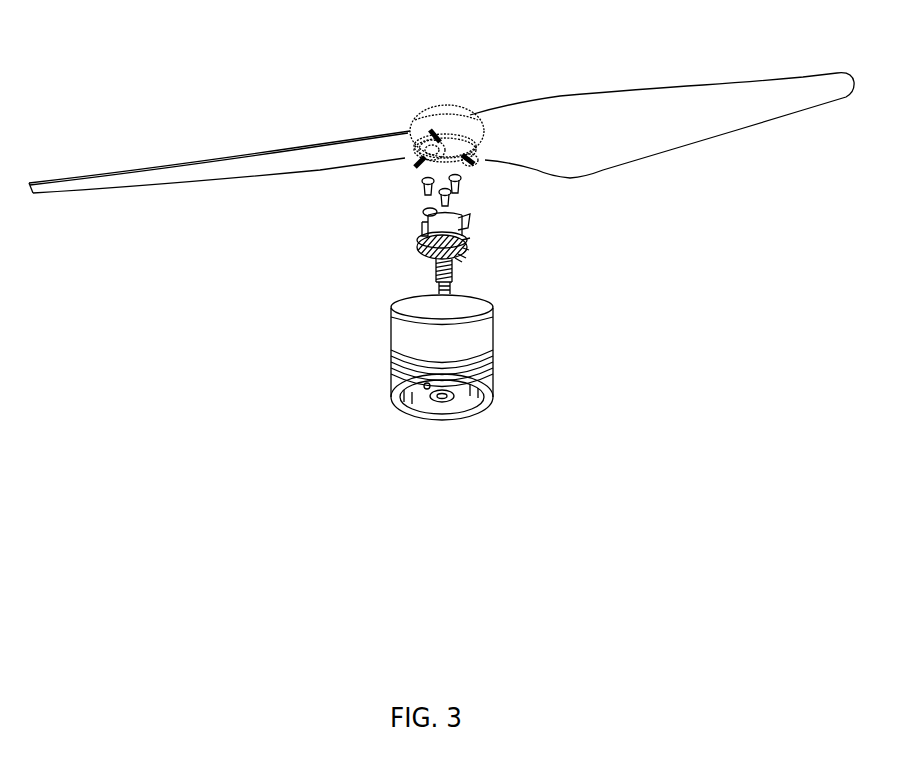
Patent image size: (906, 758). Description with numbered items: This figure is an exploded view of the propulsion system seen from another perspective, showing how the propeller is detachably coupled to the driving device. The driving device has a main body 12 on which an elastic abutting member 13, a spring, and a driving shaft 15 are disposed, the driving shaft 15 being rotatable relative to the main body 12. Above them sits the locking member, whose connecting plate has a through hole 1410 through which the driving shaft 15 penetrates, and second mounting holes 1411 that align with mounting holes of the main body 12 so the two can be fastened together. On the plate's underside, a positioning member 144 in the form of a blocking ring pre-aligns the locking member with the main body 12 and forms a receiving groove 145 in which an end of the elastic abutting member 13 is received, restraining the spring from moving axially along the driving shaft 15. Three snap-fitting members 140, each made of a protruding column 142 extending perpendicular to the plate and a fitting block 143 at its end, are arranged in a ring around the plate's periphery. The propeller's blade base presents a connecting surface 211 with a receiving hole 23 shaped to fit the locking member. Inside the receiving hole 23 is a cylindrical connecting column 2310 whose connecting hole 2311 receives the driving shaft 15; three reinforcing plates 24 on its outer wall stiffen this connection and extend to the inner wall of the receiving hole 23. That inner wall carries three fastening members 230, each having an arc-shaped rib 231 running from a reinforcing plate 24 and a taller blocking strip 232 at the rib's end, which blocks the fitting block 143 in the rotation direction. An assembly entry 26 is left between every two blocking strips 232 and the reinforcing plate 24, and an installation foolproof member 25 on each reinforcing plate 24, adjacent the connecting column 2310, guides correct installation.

The main body 12 is at (418, 333).
The elastic abutting member 13 is at (433, 275).
The driving shaft 15 is at (440, 262).
The snap-fitting member 140 is at (236, 242).
The protruding column 142 is at (437, 258).
The fitting block 143 is at (420, 237).
The positioning member 144 is at (460, 257).
The receiving groove 145 is at (463, 252).
The through hole 1410 is at (467, 242).
The second mounting holes 1411 is at (460, 260).
The connecting surface 211 is at (477, 113).
The receiving hole 23 is at (425, 210).
The reinforcing plate 24 is at (462, 176).
The installation foolproof member 25 is at (420, 172).
The assembly entry 26 is at (470, 165).
The fastening member 230 is at (244, 55).
The rib 231 is at (408, 148).
The blocking strip 232 is at (402, 130).
The connecting column 2310 is at (447, 140).
The connecting hole 2311 is at (432, 135).